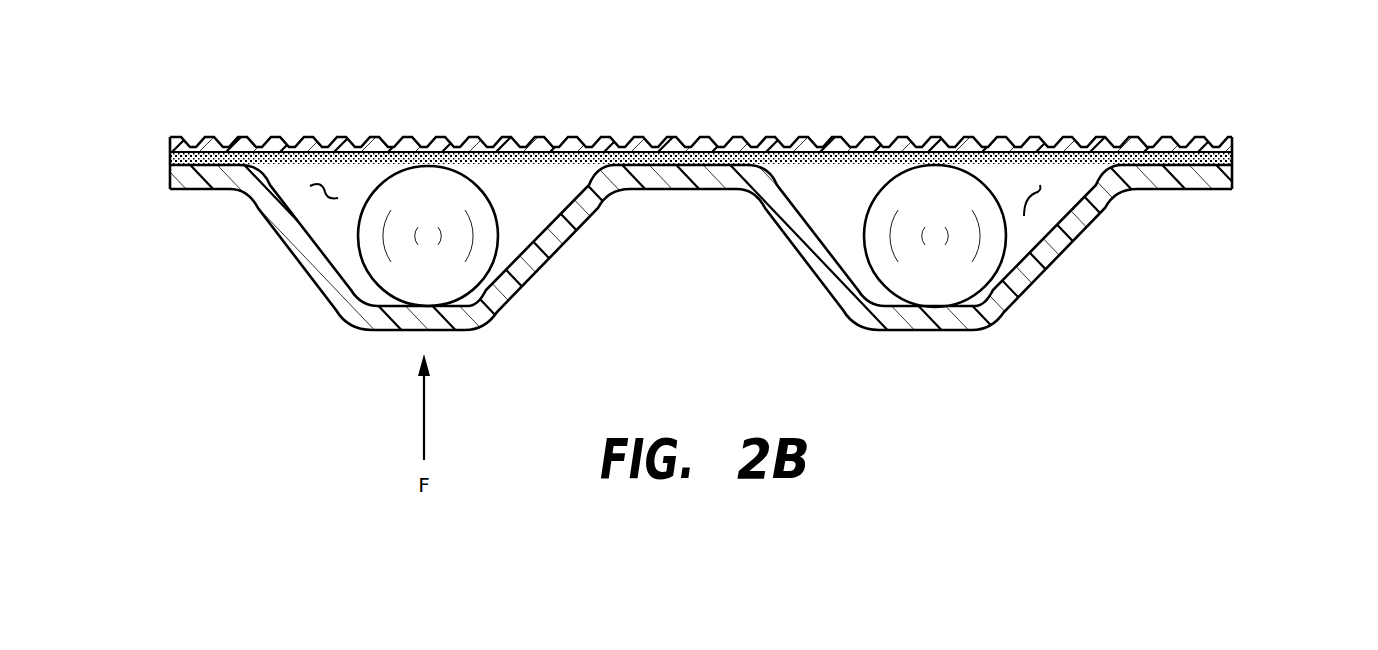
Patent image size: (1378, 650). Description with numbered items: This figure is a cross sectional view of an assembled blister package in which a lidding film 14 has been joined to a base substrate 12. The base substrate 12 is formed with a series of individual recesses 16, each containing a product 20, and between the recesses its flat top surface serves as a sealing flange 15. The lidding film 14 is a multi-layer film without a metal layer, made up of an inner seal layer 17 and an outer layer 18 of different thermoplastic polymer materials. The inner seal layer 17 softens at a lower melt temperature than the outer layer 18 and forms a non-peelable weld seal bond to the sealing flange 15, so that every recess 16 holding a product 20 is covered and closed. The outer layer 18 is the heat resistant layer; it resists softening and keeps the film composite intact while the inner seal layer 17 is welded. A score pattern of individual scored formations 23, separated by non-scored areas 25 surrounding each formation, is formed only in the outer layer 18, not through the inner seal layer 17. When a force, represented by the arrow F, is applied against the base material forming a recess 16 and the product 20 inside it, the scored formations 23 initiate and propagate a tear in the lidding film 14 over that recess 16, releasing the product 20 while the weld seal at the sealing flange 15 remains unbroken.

The base substrate 12 is at (1037, 287).
The lidding film 14 is at (985, 133).
The sealing flange 15 is at (243, 192).
The recess 16 is at (315, 198).
The inner seal layer 17 is at (1233, 160).
The outer layer 18 is at (1233, 145).
The product 20 is at (367, 272).
The scored formations 23 is at (883, 138).
The non-scored areas 25 is at (733, 138).